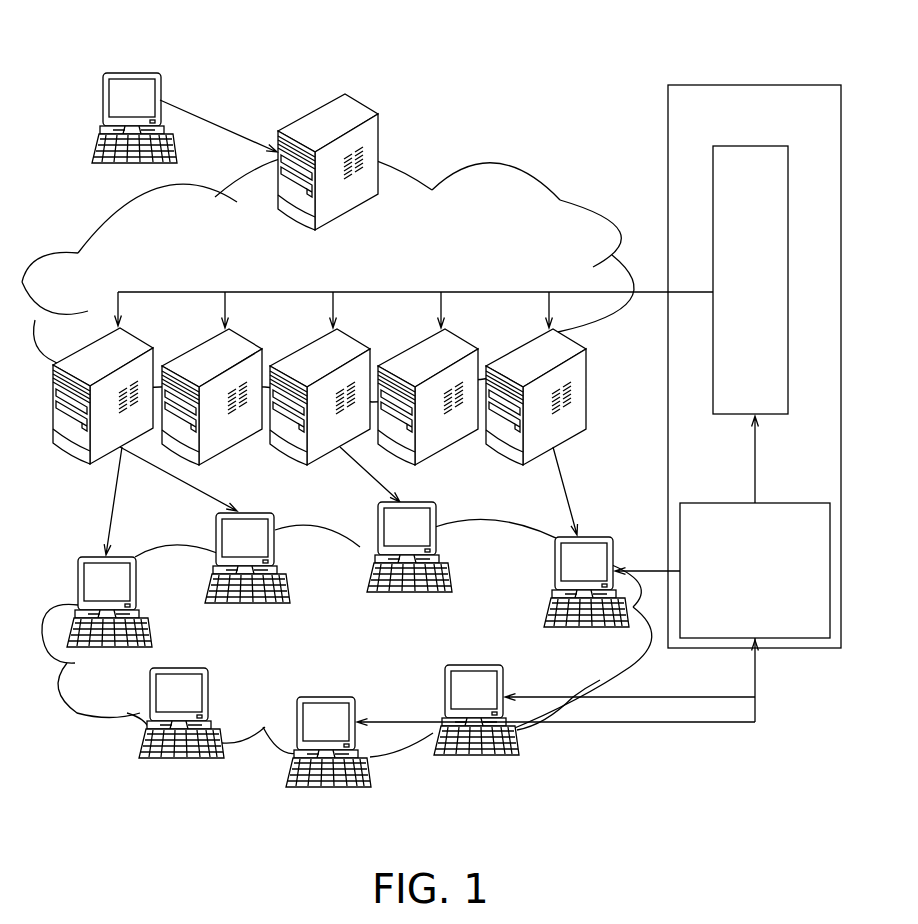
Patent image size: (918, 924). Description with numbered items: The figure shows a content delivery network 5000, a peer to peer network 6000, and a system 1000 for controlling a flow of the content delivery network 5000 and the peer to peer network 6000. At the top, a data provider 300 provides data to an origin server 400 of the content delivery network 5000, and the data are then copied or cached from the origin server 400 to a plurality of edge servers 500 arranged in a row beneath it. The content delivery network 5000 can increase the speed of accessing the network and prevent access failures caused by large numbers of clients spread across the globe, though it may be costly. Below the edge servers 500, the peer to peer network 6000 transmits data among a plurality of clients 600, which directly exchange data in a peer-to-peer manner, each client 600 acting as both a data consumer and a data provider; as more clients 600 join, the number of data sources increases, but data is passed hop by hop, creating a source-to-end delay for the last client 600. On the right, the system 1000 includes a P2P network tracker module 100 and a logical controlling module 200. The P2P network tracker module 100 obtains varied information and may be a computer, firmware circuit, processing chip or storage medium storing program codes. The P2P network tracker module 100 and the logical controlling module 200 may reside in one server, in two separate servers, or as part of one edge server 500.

The P2P network tracker module 100 is at (792, 503).
The logical controlling module 200 is at (766, 129).
The data provider 300 is at (133, 72).
The origin server 400 is at (318, 116).
The edge servers 500 is at (65, 458).
The clients 600 is at (110, 648).
The system 1000 is at (772, 66).
The content delivery network 5000 is at (387, 268).
The peer to peer network 6000 is at (368, 668).